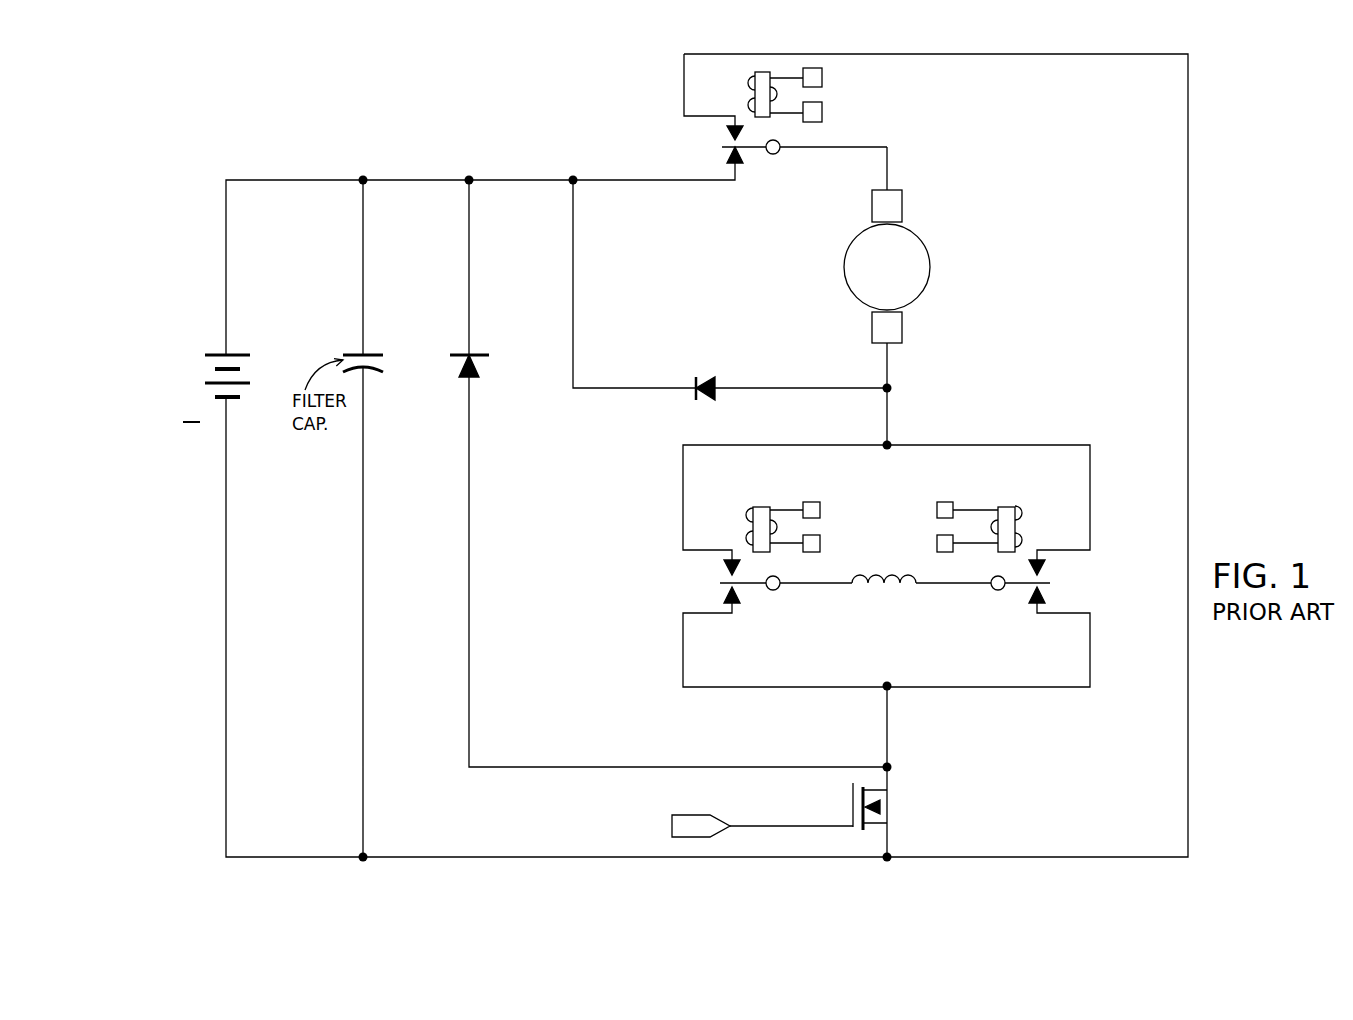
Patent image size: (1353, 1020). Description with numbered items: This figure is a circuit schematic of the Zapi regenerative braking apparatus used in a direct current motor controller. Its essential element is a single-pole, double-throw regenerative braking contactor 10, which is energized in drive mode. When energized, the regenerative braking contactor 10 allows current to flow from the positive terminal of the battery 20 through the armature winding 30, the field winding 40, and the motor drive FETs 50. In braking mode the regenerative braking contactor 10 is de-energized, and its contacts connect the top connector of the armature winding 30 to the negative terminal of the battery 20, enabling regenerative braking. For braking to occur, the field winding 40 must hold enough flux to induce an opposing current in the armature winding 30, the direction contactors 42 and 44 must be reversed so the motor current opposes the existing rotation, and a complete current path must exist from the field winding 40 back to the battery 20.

The regenerative braking contactor 10 is at (720, 143).
The battery 20 is at (198, 370).
The armature winding 30 is at (949, 266).
The field winding 40 is at (900, 505).
The direction contactor 42 is at (745, 525).
The direction contactor 44 is at (1032, 528).
The motor drive FETs 50 is at (893, 800).